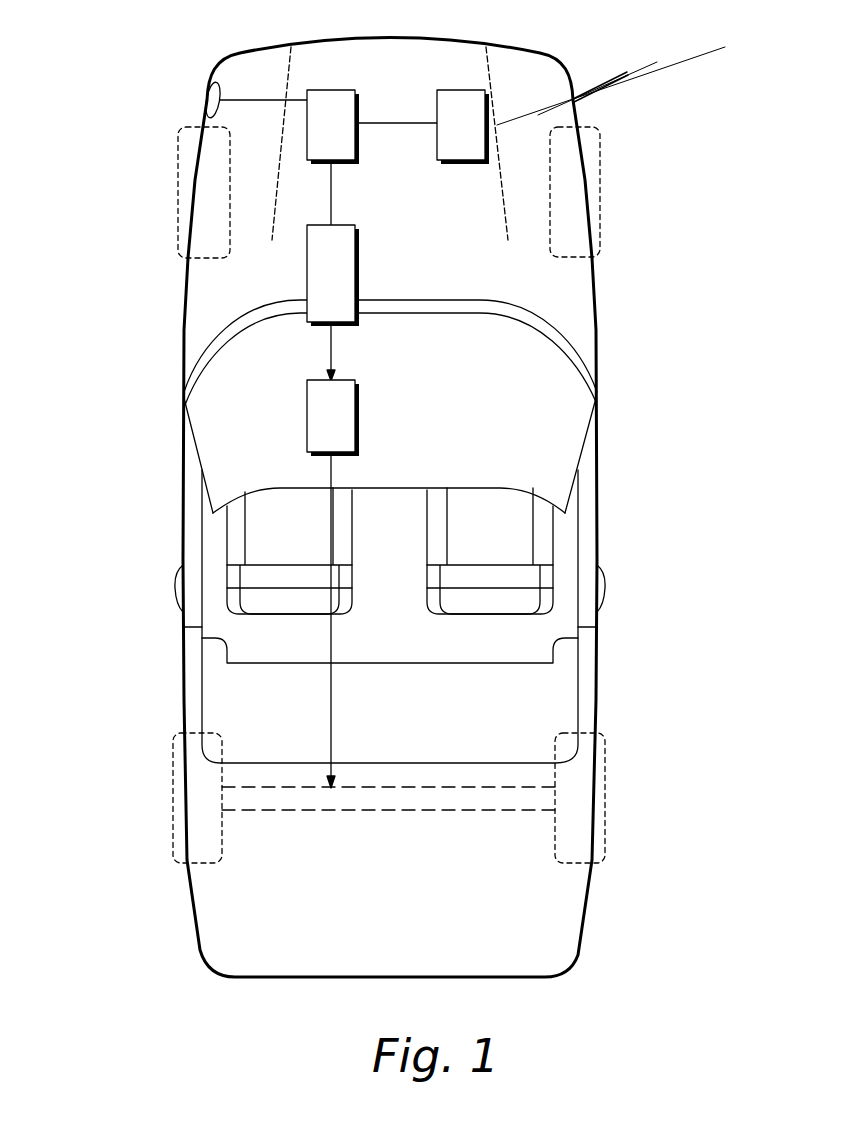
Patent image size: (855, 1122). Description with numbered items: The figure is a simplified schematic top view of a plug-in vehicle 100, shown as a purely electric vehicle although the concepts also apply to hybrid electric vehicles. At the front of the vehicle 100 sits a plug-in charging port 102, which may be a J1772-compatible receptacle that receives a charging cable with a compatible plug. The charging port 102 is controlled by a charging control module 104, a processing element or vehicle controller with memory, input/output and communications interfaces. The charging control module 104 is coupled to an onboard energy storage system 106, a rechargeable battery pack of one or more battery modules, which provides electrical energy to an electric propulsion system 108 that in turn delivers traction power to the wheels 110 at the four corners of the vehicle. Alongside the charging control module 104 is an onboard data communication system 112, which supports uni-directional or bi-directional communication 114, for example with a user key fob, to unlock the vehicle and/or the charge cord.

The vehicle 100 is at (136, 44).
The plug-in charging port 102 is at (210, 94).
The charging control module 104 is at (325, 89).
The onboard energy storage system 106 is at (306, 264).
The electric propulsion system 108 is at (357, 410).
The wheels 110 is at (181, 130).
The onboard data communication system 112 is at (459, 89).
The communication 114 is at (626, 73).